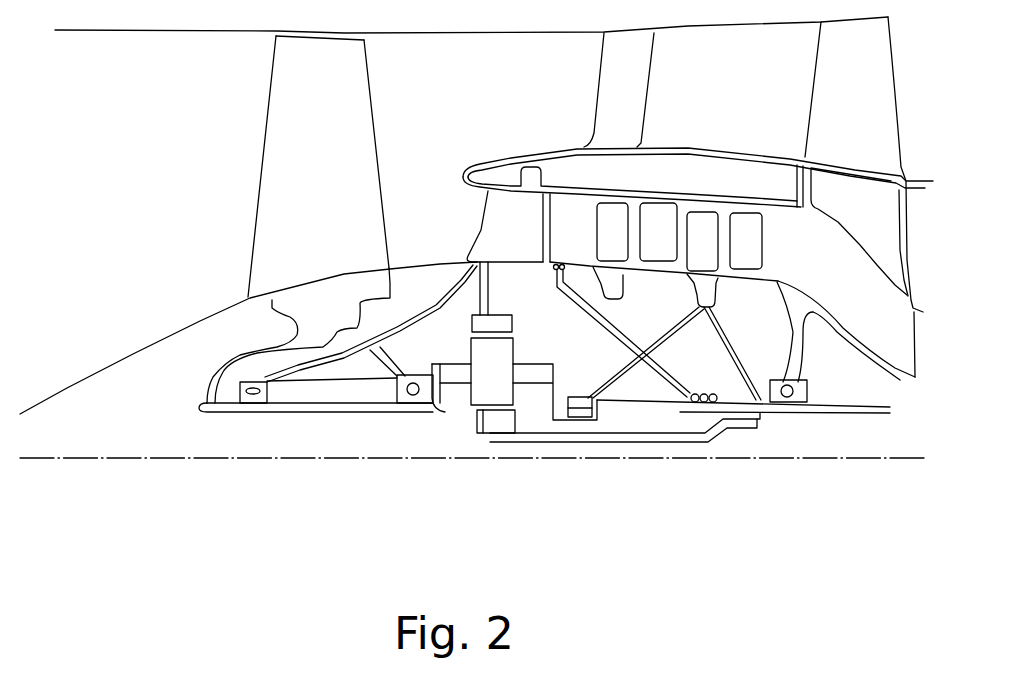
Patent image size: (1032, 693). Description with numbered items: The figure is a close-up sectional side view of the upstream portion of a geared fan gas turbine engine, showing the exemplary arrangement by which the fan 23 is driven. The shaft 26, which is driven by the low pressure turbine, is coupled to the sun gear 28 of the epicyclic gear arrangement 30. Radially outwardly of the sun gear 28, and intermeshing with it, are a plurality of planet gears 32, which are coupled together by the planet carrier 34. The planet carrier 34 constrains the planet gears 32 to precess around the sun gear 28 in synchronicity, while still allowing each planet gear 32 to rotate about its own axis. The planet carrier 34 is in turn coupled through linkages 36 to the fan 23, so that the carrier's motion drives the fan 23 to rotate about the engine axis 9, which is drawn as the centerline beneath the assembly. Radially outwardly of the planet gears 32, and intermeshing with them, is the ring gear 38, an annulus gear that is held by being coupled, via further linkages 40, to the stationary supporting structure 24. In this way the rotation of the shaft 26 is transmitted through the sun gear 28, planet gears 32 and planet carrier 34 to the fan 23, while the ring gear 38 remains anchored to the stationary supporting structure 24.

The engine axis 9 is at (235, 458).
The fan 23 is at (277, 170).
The stationary supporting structure 24 is at (504, 222).
The shaft 26 is at (663, 433).
The sun gear 28 is at (497, 422).
The epicyclic gear arrangement 30 is at (437, 430).
The planet gears 32 is at (478, 388).
The planet carrier 34 is at (545, 407).
The linkages 36 is at (435, 398).
The ring gear 38 is at (482, 323).
The linkages 40 is at (490, 283).